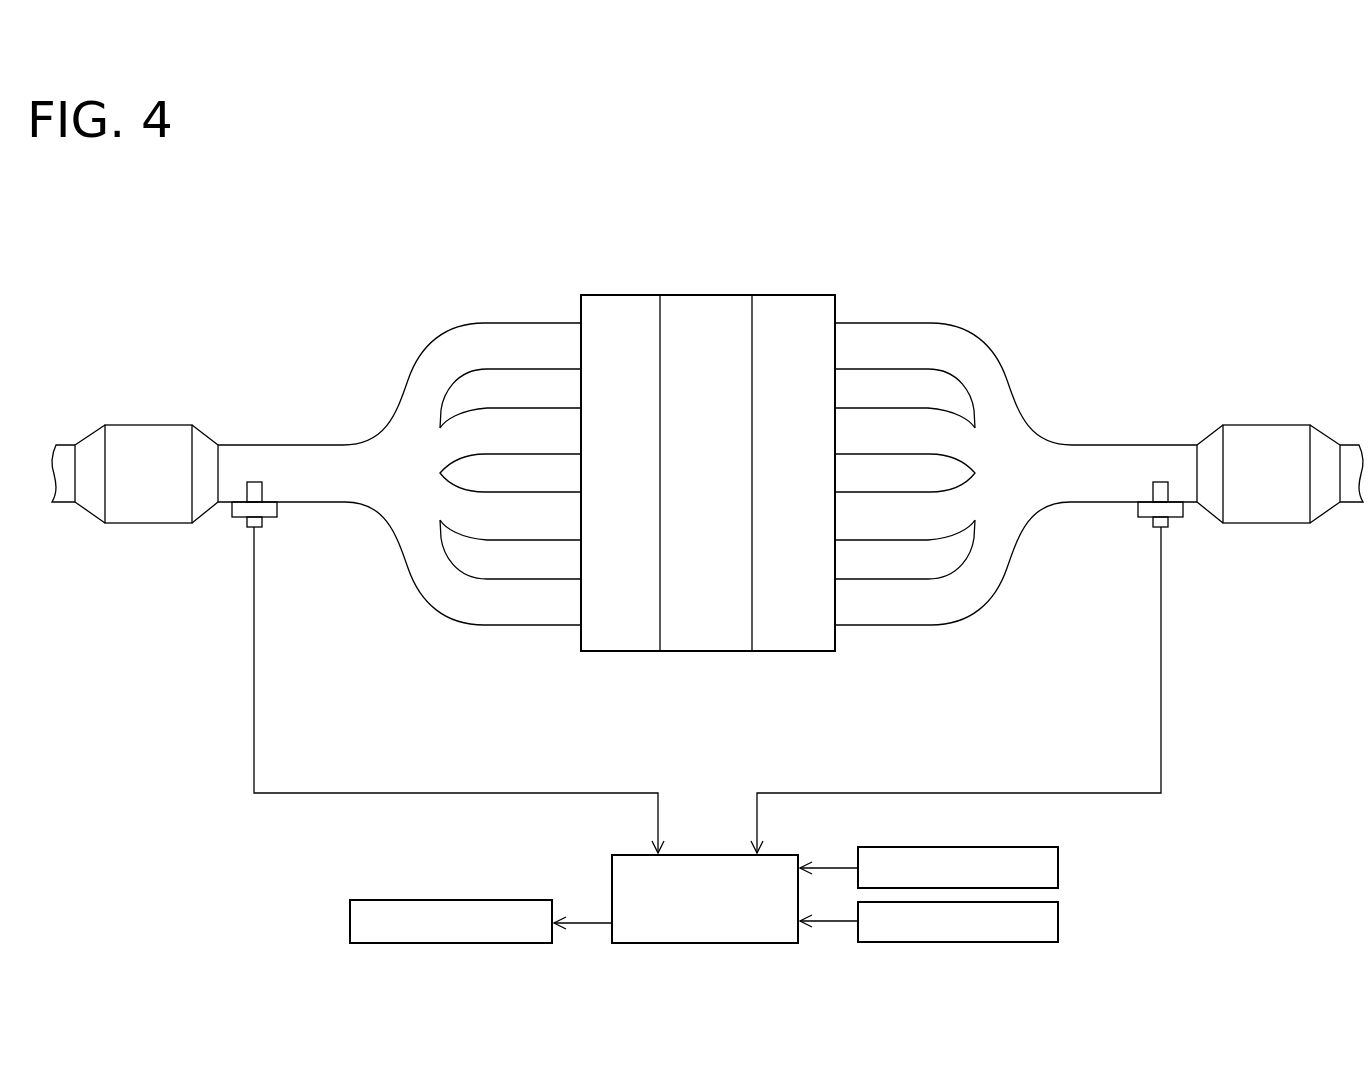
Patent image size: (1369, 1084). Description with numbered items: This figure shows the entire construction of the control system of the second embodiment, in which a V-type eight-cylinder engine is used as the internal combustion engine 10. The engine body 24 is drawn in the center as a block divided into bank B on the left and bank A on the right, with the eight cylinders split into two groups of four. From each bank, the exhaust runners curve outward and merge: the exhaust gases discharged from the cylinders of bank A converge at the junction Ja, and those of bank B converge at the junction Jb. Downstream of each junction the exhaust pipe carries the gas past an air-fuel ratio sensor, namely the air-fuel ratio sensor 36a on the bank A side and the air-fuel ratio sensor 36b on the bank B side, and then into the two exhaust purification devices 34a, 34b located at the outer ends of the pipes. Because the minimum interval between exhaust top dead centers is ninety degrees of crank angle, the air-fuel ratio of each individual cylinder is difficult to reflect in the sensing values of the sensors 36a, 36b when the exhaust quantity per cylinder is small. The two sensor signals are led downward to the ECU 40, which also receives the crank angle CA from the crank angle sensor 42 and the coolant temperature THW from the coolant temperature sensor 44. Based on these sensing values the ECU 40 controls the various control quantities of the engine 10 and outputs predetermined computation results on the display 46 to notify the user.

The internal combustion engine 10 is at (997, 210).
The engine body with bank A and bank B 24 is at (707, 295).
The exhaust purification device 34a is at (1304, 423).
The exhaust purification device 34b is at (113, 424).
The air-fuel ratio sensor 36a is at (1165, 528).
The air-fuel ratio sensor 36b is at (249, 528).
The ECU 40 is at (780, 855).
The crank angle sensor 42 is at (1058, 868).
The coolant temperature sensor 44 is at (1058, 921).
The display 46 is at (348, 917).
The junction Ja is at (1073, 377).
The junction Jb is at (342, 379).